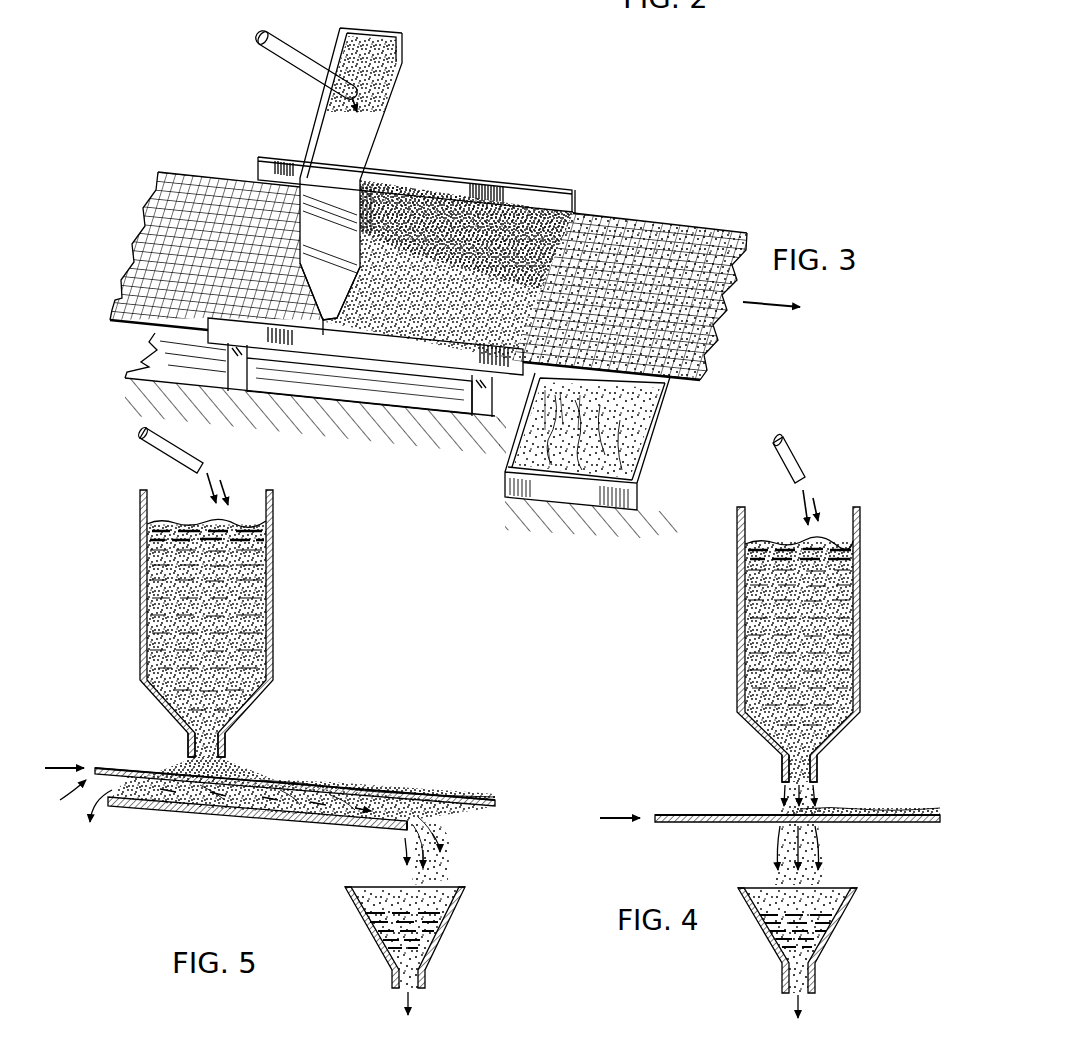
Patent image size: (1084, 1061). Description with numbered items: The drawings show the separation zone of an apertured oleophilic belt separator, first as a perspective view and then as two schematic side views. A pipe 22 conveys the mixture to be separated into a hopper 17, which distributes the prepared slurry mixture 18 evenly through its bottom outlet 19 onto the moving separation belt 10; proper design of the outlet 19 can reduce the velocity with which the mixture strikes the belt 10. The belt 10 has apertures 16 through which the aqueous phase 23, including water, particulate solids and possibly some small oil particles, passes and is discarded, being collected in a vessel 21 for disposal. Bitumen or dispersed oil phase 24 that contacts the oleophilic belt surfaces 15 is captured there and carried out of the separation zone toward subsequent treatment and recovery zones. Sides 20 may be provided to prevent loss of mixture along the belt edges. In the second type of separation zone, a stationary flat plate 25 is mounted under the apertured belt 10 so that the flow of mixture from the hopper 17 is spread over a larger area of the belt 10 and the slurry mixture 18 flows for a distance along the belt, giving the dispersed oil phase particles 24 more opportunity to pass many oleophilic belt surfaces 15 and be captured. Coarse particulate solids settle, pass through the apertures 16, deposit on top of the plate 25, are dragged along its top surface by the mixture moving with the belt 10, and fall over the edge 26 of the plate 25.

In FIG. 3, the separation belt 10 is at (203, 160).
In FIG. 5, the separation belt 10 is at (73, 795).
In FIG. 4, the separation belt 10 is at (700, 805).
In FIG. 3, the oleophilic belt surfaces 15 is at (166, 168).
In FIG. 5, the oleophilic belt surfaces 15 is at (120, 773).
In FIG. 4, the oleophilic belt surfaces 15 is at (700, 824).
In FIG. 3, the belt apertures 16 is at (162, 240).
In FIG. 5, the belt apertures 16 is at (138, 773).
In FIG. 4, the belt apertures 16 is at (672, 822).
In FIG. 3, the hopper 17 is at (393, 107).
In FIG. 5, the hopper 17 is at (140, 580).
In FIG. 4, the hopper 17 is at (862, 620).
In FIG. 3, the slurry mixture 18 is at (340, 133).
In FIG. 5, the slurry mixture 18 is at (247, 522).
In FIG. 4, the slurry mixture 18 is at (813, 510).
In FIG. 3, the hopper outlet 19 is at (333, 318).
In FIG. 5, the hopper outlet 19 is at (228, 747).
In FIG. 4, the hopper outlet 19 is at (782, 770).
In FIG. 3, the sides 20 is at (518, 192).
In FIG. 3, the vessel 21 is at (650, 453).
In FIG. 5, the vessel 21 is at (440, 940).
In FIG. 4, the vessel 21 is at (767, 942).
In FIG. 3, the pipe 22 is at (290, 47).
In FIG. 5, the pipe 22 is at (157, 452).
In FIG. 4, the pipe 22 is at (787, 457).
In FIG. 3, the aqueous phase 23 is at (577, 398).
In FIG. 5, the aqueous phase 23 is at (200, 813).
In FIG. 4, the aqueous phase 23 is at (817, 853).
In FIG. 3, the oil phase 24 is at (593, 233).
In FIG. 5, the oil phase 24 is at (357, 784).
In FIG. 4, the oil phase 24 is at (900, 808).
In FIG. 5, the stationary flat plate 25 is at (253, 818).
In FIG. 5, the plate edge 26 is at (393, 833).